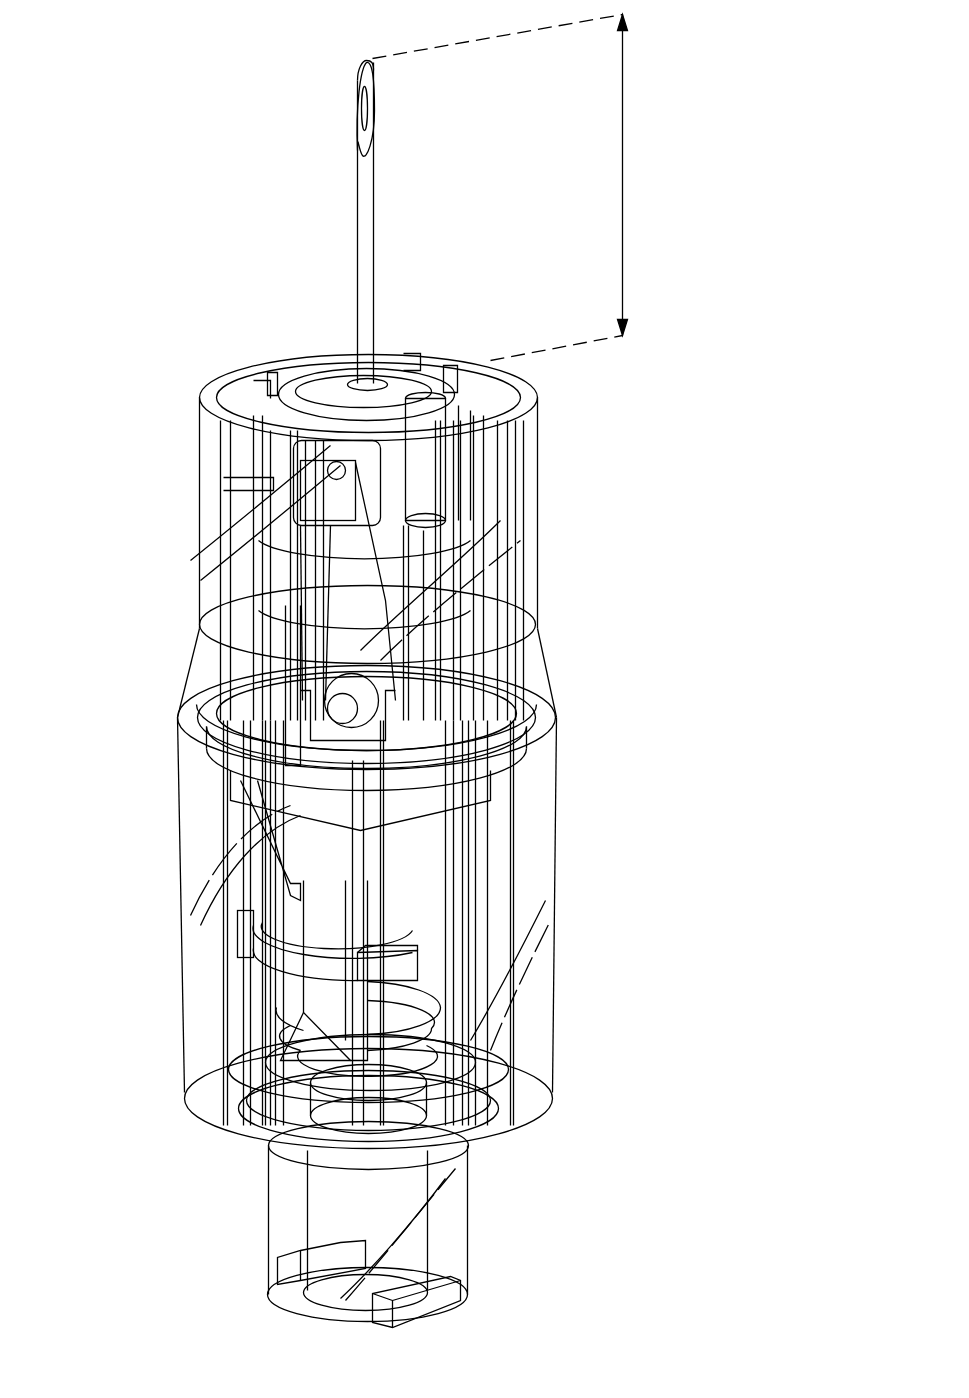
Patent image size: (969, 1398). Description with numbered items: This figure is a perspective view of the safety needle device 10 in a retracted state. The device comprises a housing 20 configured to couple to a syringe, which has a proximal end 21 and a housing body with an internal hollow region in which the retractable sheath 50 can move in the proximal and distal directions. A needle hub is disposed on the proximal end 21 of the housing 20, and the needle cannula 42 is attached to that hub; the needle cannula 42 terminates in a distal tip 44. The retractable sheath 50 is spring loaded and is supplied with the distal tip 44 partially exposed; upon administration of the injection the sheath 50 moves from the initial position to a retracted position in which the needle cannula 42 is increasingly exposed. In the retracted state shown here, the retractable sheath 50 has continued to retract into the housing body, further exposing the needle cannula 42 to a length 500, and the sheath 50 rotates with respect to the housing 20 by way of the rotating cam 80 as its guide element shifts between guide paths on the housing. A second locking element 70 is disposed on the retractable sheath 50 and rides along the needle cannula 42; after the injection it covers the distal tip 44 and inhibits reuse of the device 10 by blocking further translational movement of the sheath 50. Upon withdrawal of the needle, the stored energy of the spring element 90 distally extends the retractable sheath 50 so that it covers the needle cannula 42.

The safety needle device 10 is at (113, 153).
The housing 20 is at (180, 829).
The proximal end 21 is at (468, 1254).
The needle cannula 42 is at (375, 233).
The distal tip 44 is at (359, 100).
The retractable sheath 50 is at (332, 376).
The second locking element 70 is at (332, 508).
The rotating cam 80 is at (276, 958).
The spring element 90 is at (446, 1001).
The length 500 is at (623, 182).